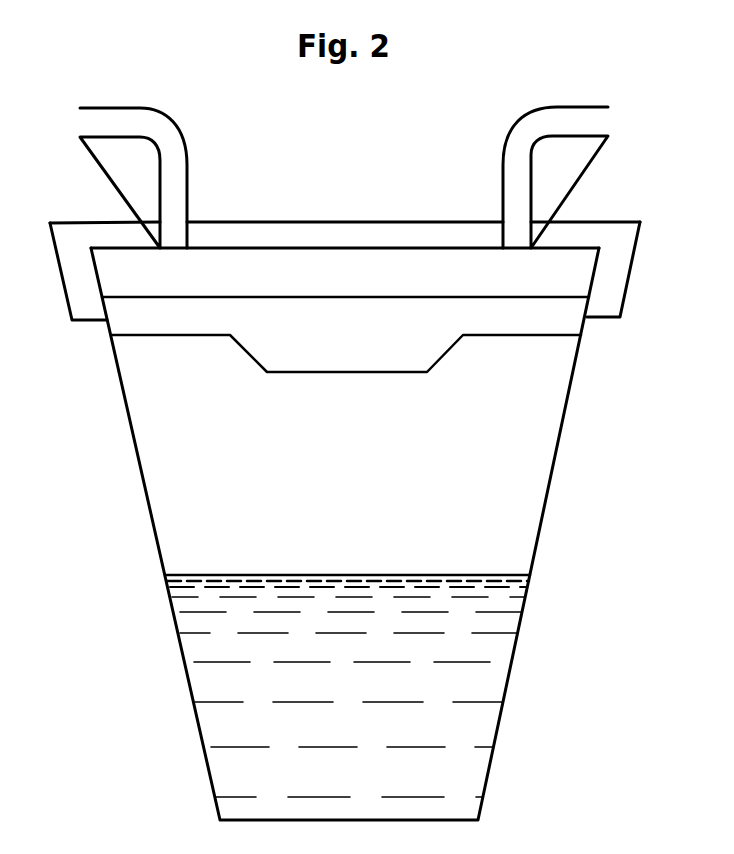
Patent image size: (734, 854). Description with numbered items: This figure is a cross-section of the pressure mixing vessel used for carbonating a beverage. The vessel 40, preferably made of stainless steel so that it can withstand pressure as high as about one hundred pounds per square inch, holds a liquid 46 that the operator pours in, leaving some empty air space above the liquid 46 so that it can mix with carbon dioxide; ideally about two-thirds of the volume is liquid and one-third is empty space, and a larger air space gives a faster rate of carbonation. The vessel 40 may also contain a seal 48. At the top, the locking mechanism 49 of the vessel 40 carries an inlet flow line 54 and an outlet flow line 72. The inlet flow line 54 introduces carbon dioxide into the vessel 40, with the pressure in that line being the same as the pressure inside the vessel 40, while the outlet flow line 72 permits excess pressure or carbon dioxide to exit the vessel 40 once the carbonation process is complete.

The vessel 40 is at (570, 495).
The liquid 46 is at (488, 683).
The seal 48 is at (538, 344).
The locking mechanism 49 is at (622, 240).
The inlet flow line 54 is at (122, 103).
The outlet flow line 72 is at (560, 116).